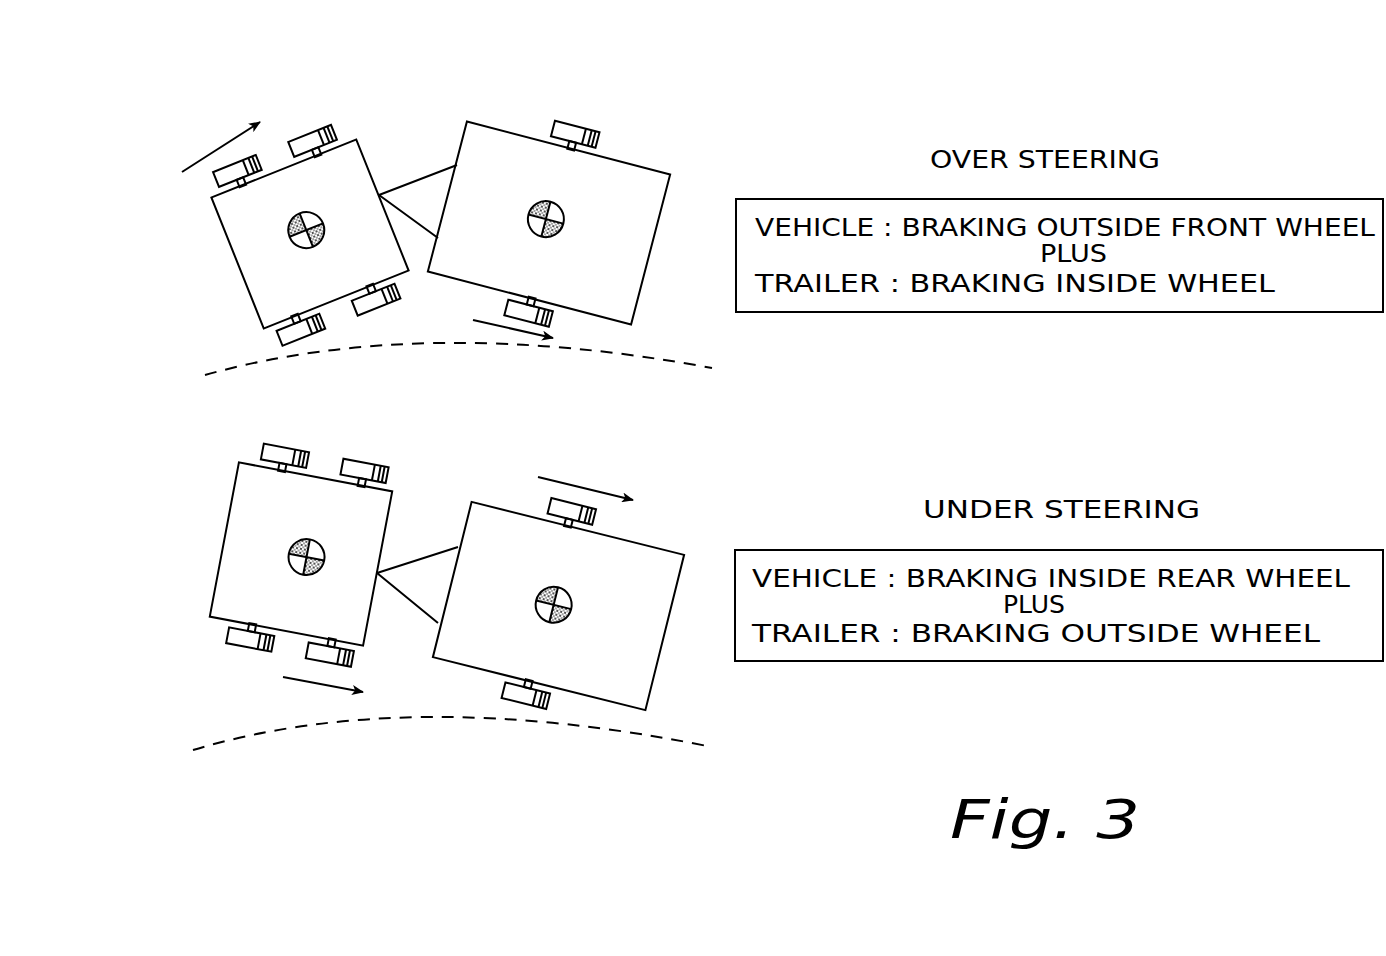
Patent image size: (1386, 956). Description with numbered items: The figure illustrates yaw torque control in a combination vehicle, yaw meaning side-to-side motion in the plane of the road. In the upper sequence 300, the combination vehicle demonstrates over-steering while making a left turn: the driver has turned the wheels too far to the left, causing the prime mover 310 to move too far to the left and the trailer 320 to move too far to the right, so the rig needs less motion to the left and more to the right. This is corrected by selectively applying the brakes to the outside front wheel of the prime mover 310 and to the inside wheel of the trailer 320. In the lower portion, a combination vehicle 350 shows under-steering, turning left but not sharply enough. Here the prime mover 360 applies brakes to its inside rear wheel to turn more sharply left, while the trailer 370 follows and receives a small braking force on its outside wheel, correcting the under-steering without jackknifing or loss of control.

The upper sequence 300 is at (677, 90).
The prime mover 310 is at (355, 150).
The trailer 320 is at (661, 174).
The combination vehicle 350 is at (182, 722).
The prime mover 360 is at (240, 506).
The trailer 370 is at (657, 552).